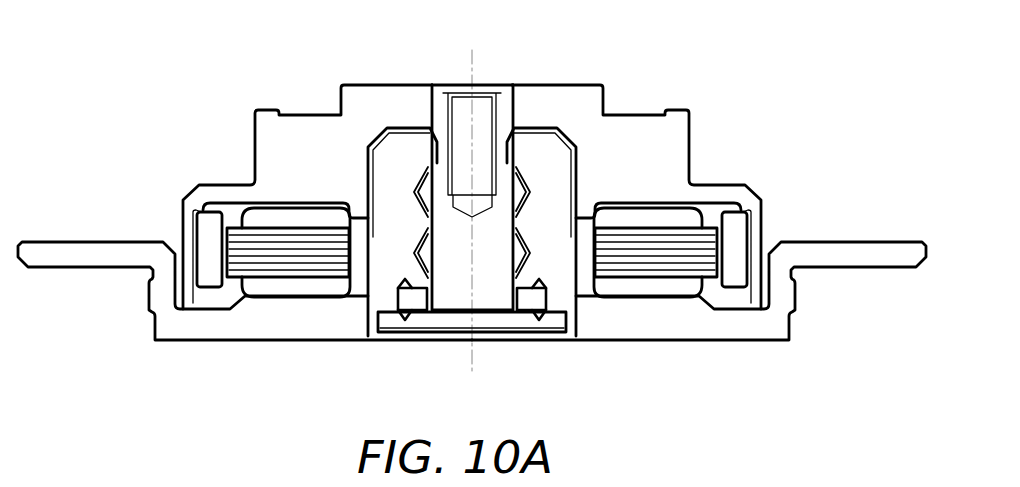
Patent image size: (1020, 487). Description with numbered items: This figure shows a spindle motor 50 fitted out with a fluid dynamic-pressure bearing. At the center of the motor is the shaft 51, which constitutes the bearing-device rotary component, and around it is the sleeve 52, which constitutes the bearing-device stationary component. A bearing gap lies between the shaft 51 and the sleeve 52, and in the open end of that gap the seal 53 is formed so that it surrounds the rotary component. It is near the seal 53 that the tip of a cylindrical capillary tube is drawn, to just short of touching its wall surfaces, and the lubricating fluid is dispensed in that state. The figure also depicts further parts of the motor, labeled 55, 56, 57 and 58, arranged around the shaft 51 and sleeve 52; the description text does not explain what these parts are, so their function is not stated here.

The solenoid actuator assembly 50 is at (222, 98).
The shaft 51 is at (500, 103).
The sleeve 52 is at (555, 163).
The seal 53 is at (432, 113).
The wave spring 55 is at (535, 253).
The left retaining nut 56 is at (408, 303).
The base plate 57 is at (457, 322).
The right retaining nut 58 is at (553, 278).